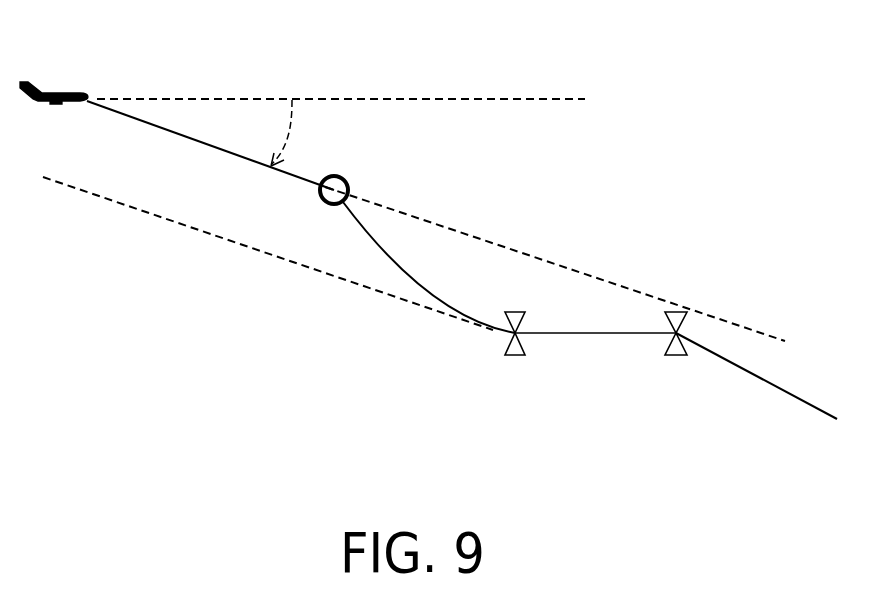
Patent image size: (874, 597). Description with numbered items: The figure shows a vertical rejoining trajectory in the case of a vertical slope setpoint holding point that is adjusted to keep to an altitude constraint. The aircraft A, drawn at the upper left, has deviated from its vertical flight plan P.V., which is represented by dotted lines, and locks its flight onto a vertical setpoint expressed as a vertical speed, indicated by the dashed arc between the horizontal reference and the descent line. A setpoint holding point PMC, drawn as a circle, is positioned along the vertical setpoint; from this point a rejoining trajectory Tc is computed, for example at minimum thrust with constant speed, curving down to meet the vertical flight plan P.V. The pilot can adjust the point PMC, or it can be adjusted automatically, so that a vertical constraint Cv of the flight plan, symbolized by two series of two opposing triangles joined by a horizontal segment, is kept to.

The aircraft A is at (54, 93).
The setpoint holding point PMC is at (347, 179).
The rejoining trajectory Tc is at (412, 279).
The vertical flight plan P.V. is at (230, 240).
The vertical constraint Cv is at (515, 350).